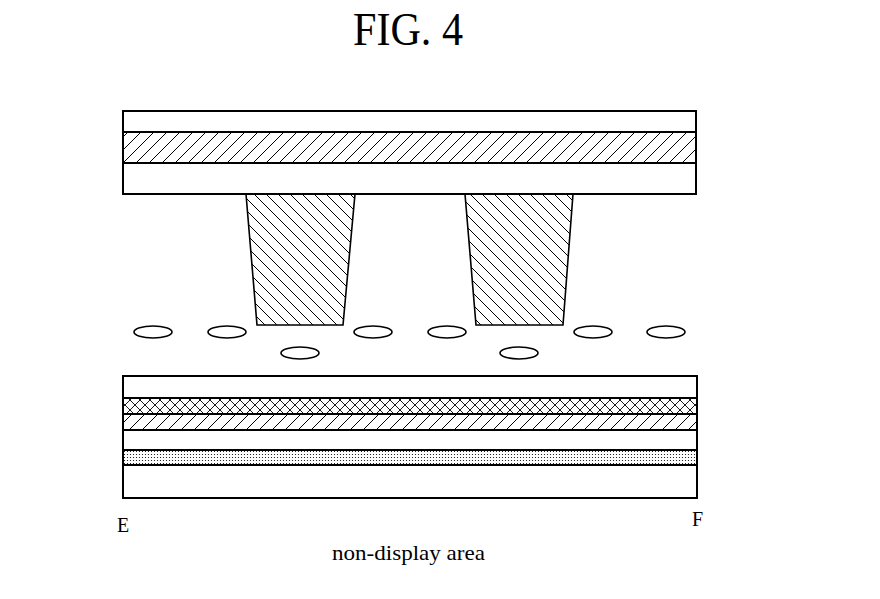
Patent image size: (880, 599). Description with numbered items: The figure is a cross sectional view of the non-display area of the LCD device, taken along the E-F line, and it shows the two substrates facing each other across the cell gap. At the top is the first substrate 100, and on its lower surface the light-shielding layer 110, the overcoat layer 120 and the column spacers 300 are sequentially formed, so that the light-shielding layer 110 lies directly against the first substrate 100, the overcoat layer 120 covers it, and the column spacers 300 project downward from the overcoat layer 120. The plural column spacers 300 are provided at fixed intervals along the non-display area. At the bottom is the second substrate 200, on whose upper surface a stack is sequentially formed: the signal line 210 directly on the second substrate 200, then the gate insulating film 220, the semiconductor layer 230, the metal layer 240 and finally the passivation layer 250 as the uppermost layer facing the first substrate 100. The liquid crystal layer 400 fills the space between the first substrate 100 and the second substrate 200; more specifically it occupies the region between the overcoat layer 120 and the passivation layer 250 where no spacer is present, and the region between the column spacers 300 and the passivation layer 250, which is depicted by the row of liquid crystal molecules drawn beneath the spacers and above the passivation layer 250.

The first substrate 100 is at (688, 121).
The light-shielding layer 110 is at (688, 145).
The overcoat layer 120 is at (688, 178).
The column spacers 300 is at (560, 255).
The liquid crystal layer 400 is at (124, 330).
The passivation layer 250 is at (688, 386).
The metal layer 240 is at (688, 406).
The semiconductor layer 230 is at (688, 422).
The gate insulating film 220 is at (688, 440).
The signal line 210 is at (688, 461).
The second substrate 200 is at (688, 490).